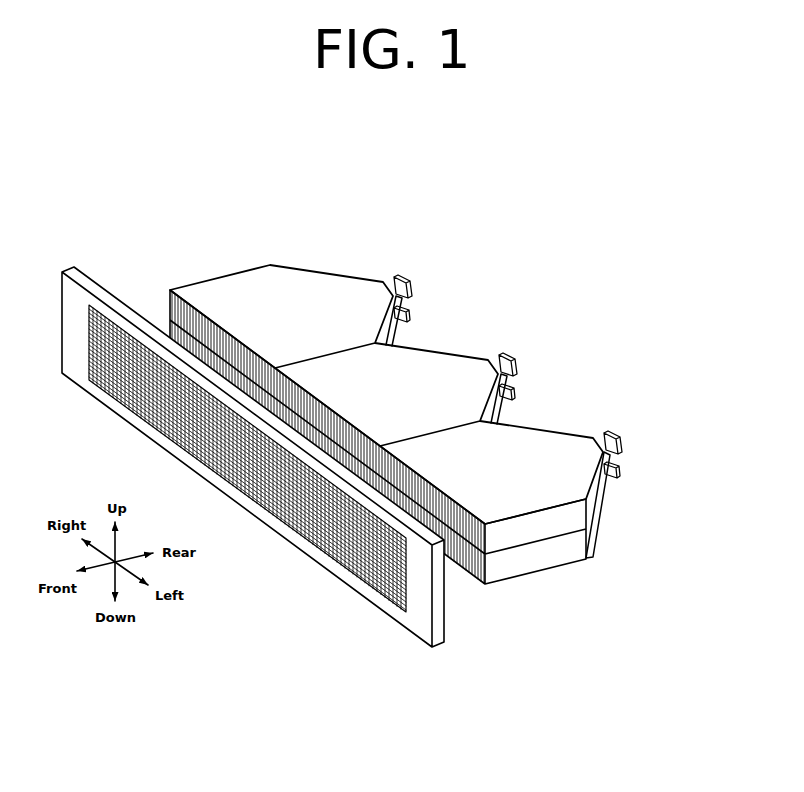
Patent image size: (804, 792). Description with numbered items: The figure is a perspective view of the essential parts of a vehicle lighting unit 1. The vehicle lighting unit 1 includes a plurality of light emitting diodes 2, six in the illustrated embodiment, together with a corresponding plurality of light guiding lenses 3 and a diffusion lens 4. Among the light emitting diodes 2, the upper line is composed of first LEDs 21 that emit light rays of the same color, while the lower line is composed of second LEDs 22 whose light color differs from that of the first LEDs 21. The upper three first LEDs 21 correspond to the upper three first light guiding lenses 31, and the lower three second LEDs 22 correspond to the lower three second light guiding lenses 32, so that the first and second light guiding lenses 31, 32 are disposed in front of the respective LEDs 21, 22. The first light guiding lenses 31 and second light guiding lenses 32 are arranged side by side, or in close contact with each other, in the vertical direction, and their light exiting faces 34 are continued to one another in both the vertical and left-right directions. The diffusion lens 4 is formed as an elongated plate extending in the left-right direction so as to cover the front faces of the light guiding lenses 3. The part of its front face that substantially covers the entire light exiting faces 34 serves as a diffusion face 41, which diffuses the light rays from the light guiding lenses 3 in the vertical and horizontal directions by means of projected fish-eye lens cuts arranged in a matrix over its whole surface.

The vehicle lighting unit 1 is at (507, 234).
The light emitting diodes 2 is at (542, 401).
The first LEDs 21 is at (403, 277).
The second LEDs 22 is at (409, 312).
The light guiding lenses 3 is at (377, 421).
The first light guiding lenses 31 is at (455, 455).
The second light guiding lenses 32 is at (274, 367).
The light exiting faces 34 is at (175, 340).
The diffusion lens 4 is at (420, 615).
The diffusion face 41 is at (243, 493).